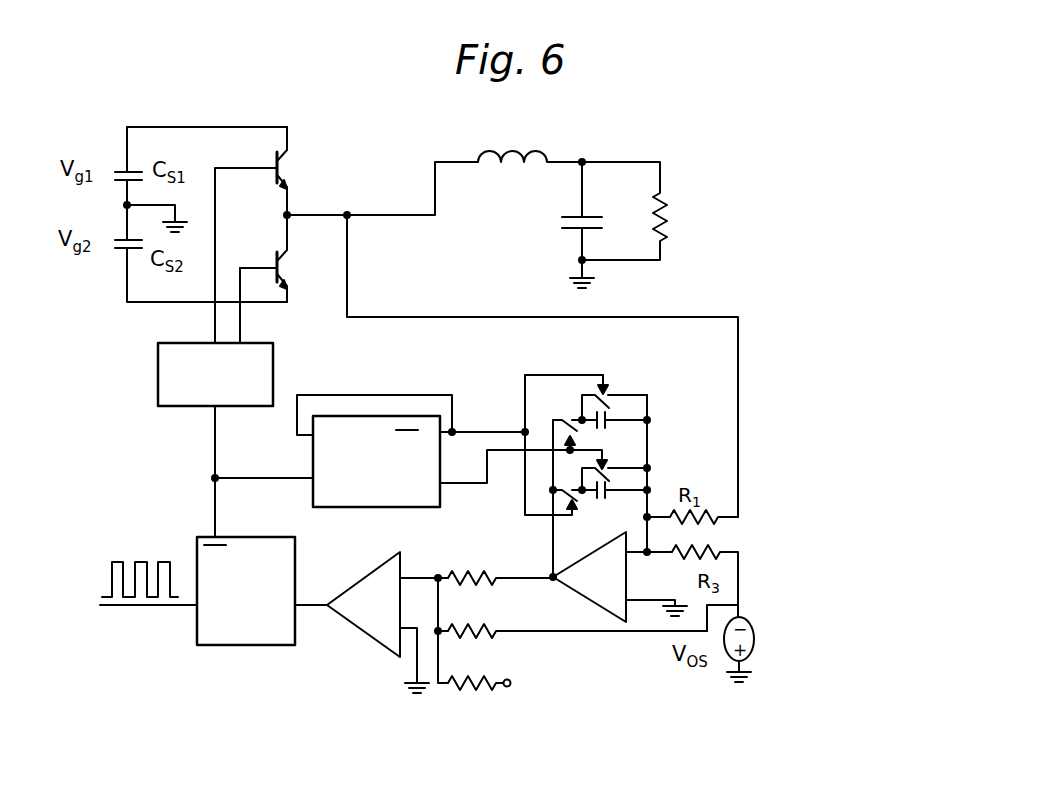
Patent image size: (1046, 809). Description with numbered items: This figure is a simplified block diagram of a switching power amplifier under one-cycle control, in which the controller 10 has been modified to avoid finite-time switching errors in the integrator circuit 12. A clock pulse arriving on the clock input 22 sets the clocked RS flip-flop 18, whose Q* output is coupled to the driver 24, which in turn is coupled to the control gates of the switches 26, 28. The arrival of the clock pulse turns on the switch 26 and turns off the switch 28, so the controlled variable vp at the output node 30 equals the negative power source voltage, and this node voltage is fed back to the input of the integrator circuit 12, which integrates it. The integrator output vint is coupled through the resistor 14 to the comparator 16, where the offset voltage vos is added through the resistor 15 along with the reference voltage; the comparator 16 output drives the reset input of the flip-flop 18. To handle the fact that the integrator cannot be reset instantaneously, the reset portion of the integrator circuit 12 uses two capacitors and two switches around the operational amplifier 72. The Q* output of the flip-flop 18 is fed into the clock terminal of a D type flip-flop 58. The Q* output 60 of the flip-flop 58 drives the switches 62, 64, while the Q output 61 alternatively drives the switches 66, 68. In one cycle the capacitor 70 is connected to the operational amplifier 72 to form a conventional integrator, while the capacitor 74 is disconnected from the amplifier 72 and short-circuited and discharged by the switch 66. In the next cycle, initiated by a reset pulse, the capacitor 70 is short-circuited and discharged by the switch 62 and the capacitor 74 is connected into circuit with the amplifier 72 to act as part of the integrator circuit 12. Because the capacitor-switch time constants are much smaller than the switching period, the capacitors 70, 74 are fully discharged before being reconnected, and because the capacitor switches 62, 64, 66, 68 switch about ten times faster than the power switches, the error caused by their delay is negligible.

The controller 10 is at (628, 142).
The integrator circuit 12 is at (656, 677).
The resistor 14 is at (455, 573).
The resistor 15 is at (498, 636).
The comparator 16 is at (362, 633).
The clocked RS flip-flop 18 is at (250, 645).
The clock input 22 is at (178, 617).
The driver 24 is at (158, 380).
The switch 26 is at (294, 278).
The switch 28 is at (289, 163).
The output node 30 is at (361, 207).
The D type flip-flop 58 is at (390, 416).
The Q* output 60 is at (479, 430).
The Q output 61 is at (468, 485).
The switch 62 is at (606, 391).
The switch 64 is at (581, 500).
The switch 66 is at (611, 468).
The switch 68 is at (570, 417).
The capacitor 70 is at (612, 416).
The operational amplifier 72 is at (626, 582).
The capacitor 74 is at (610, 490).